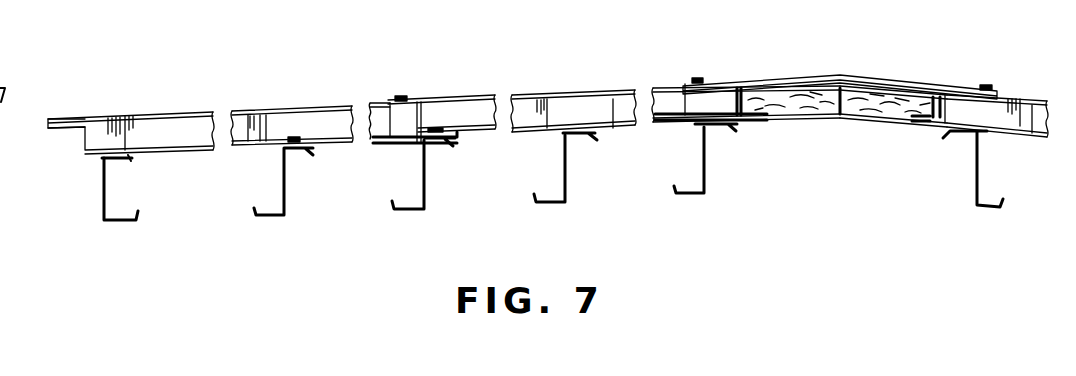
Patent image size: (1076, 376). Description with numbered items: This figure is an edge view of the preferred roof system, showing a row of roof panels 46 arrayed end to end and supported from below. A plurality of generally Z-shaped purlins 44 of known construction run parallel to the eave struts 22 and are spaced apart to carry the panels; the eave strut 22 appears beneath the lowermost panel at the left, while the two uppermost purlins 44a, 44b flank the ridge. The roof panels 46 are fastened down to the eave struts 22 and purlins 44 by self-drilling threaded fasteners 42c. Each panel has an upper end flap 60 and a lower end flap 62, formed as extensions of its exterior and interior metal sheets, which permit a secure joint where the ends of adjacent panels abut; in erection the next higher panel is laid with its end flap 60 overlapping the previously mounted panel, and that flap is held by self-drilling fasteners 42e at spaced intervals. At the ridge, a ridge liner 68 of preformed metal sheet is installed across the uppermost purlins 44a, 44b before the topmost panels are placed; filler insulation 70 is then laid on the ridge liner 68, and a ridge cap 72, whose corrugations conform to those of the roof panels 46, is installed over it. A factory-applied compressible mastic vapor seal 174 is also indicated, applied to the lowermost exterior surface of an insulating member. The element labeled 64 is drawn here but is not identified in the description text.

The eave strut 22 is at (102, 200).
The self-drilling threaded fastener 42c is at (125, 160).
The self-drilling fastener 42e is at (403, 97).
The purlin 44 is at (287, 217).
The uppermost purlin 44a is at (707, 195).
The uppermost purlin 44b is at (968, 204).
The roof panel 46 is at (158, 130).
The upper end flap 60 is at (63, 131).
The lower end flap 62 is at (445, 132).
The spacer 64 is at (420, 120).
The ridge liner 68 is at (840, 118).
The filler insulation 70 is at (813, 92).
The ridge cap 72 is at (868, 78).
The vapor seal 174 is at (248, 150).